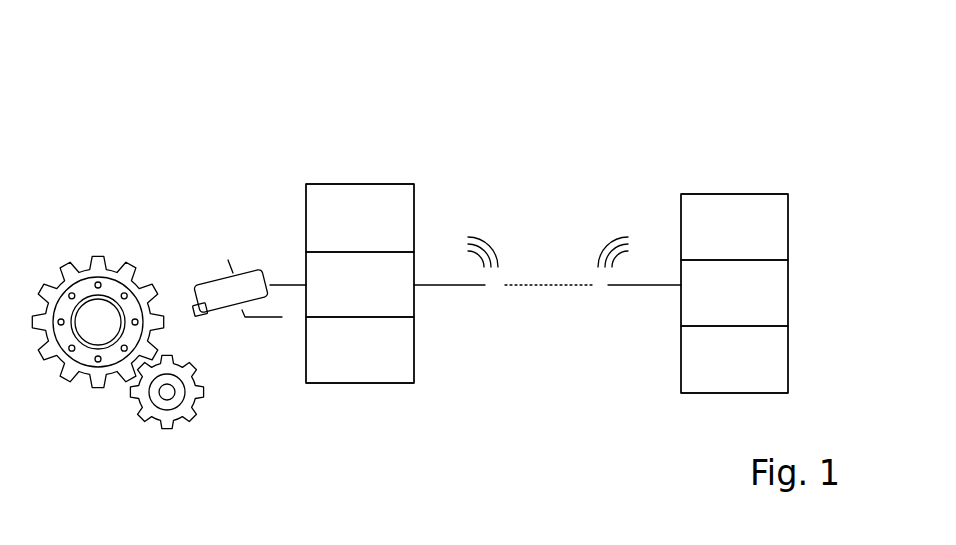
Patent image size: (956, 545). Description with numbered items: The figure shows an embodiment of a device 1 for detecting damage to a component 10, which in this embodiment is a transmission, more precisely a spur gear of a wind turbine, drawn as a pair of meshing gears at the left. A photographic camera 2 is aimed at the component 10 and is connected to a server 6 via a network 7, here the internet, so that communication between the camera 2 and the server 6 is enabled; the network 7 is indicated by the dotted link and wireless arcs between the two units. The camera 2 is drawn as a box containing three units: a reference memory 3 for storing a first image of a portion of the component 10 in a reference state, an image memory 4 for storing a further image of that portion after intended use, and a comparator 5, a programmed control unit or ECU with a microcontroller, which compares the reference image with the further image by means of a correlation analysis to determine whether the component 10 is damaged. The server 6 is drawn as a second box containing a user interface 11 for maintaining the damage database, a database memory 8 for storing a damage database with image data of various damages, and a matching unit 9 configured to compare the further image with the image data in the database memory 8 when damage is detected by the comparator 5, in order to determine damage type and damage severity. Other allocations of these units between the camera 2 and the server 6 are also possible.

The device 1 is at (182, 143).
The component 10 is at (72, 277).
The photographic camera 2 is at (248, 283).
The reference memory 3 is at (360, 218).
The image memory 4 is at (360, 284).
The comparator 5 is at (360, 350).
The network 7 is at (545, 246).
The server 6 is at (710, 194).
The user interface 11 is at (734, 227).
The database memory 8 is at (734, 293).
The matching unit 9 is at (734, 359).